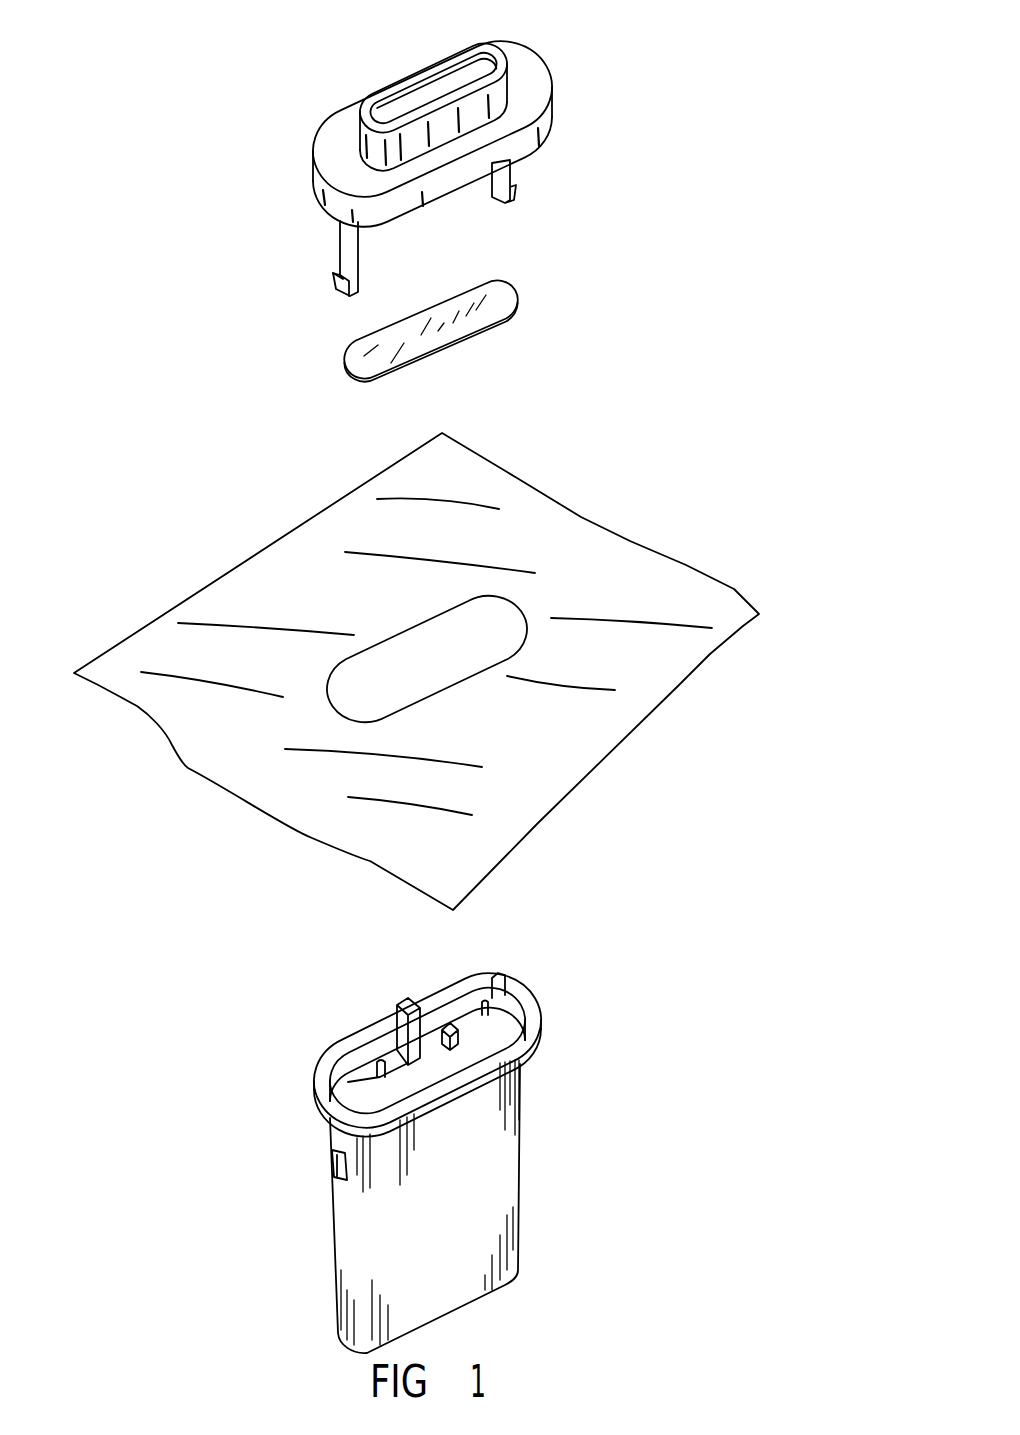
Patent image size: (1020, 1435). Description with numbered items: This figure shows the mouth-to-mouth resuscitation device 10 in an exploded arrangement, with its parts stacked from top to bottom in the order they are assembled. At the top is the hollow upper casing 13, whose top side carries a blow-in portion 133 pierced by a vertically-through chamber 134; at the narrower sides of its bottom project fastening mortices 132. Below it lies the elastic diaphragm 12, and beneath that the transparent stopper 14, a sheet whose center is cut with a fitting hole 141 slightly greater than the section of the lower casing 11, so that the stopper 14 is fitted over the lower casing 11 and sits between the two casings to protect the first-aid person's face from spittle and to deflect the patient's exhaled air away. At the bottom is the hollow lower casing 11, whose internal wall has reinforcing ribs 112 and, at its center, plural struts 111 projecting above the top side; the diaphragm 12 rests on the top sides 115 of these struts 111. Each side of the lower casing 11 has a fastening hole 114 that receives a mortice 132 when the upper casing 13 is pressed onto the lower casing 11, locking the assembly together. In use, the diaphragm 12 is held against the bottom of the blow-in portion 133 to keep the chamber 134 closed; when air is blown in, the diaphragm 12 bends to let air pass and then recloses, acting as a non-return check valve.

The chemical detector assembly 10 is at (612, 321).
The lower casing 11 is at (410, 1120).
The struts 111 is at (403, 1022).
The ribs 112 is at (452, 1022).
The fastening hole 114 is at (330, 1162).
The top sides of the struts 115 is at (408, 998).
The diaphragm 12 is at (377, 360).
The upper casing 13 is at (358, 152).
The fastening mortice 132 is at (342, 267).
The blow-in portion 133 is at (392, 83).
The chamber 134 is at (418, 97).
The transparent stopper 14 is at (444, 668).
The fitting hole 141 is at (488, 616).